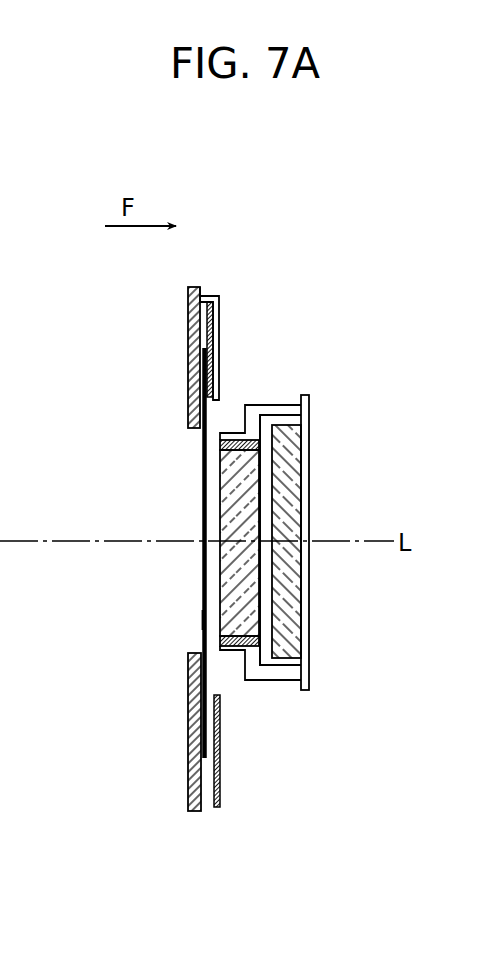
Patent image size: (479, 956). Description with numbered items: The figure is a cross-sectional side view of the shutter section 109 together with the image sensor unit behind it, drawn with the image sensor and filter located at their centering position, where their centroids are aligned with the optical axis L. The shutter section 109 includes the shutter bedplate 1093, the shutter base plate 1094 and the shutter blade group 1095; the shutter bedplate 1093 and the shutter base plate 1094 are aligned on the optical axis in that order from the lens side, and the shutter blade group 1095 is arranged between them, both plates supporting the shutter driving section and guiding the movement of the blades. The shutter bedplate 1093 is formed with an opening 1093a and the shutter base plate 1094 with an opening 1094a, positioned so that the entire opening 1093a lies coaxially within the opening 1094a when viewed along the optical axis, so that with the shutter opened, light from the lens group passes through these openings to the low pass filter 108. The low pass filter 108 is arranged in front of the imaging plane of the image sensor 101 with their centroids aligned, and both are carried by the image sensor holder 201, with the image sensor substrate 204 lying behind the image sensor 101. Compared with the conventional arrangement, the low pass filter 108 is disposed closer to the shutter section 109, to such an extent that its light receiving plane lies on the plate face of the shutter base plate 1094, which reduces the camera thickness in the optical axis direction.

The image sensor 101 is at (301, 448).
The low pass filter 108 is at (231, 653).
The shutter section 109 is at (223, 279).
The shutter bedplate 1093 is at (190, 345).
The opening of the shutter bedplate 1093a is at (198, 617).
The shutter base plate 1094 is at (221, 319).
The opening of the shutter base plate 1094a is at (217, 421).
The shutter blade group 1095 is at (202, 495).
The image sensor holder 201 is at (282, 410).
The image sensor substrate 204 is at (308, 490).